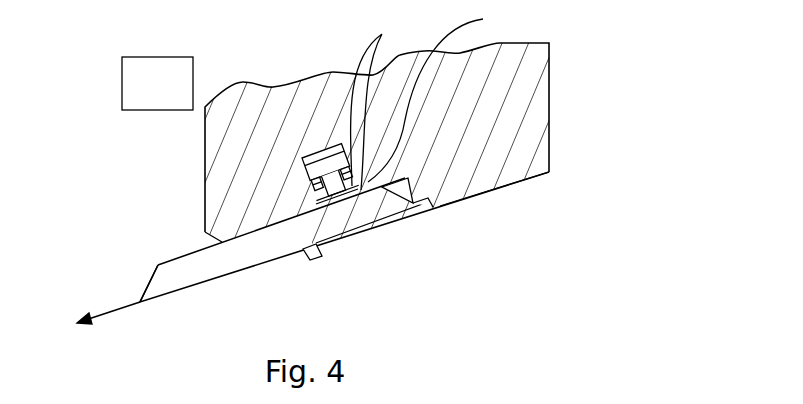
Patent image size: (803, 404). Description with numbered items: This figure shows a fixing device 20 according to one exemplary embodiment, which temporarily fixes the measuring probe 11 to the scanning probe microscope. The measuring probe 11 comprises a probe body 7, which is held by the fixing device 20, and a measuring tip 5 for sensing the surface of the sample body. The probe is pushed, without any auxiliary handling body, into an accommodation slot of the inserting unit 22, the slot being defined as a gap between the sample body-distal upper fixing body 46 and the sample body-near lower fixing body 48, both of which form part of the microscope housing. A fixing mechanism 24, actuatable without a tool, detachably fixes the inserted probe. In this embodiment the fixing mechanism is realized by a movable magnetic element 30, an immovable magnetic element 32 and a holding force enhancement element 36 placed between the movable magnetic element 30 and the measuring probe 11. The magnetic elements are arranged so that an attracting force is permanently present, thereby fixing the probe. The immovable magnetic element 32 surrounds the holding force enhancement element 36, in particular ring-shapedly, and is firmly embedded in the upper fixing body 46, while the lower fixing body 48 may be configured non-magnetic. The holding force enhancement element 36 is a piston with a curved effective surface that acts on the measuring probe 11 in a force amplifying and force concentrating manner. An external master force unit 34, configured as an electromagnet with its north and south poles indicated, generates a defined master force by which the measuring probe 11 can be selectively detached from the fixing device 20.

The measuring tip 5 is at (93, 327).
The probe body 7 is at (207, 270).
The measuring probe 11 is at (137, 269).
The fixing device 20 is at (570, 71).
The inserting unit 22 is at (218, 193).
The fixing mechanism 24 is at (431, 98).
The movable magnetic element 30 is at (316, 160).
The immovable magnetic element 32 is at (316, 196).
The external master force unit 34 is at (122, 84).
The holding force enhancement element 36 is at (360, 197).
The upper fixing body 46 is at (512, 180).
The lower fixing body 48 is at (377, 228).